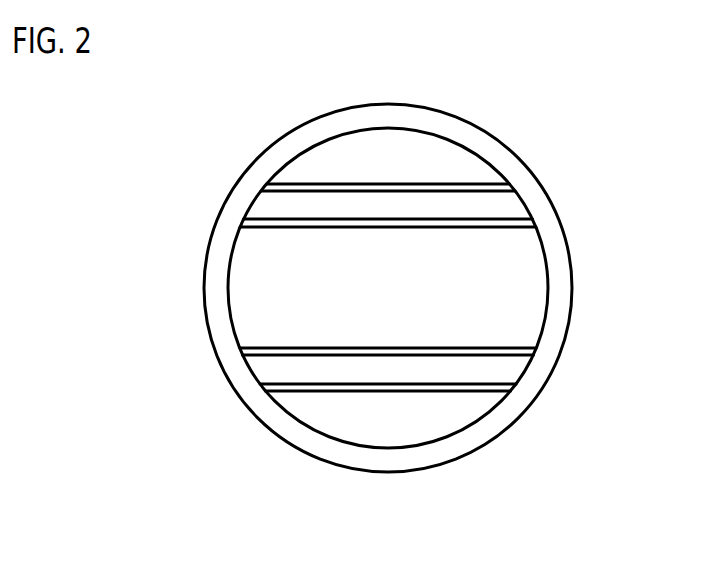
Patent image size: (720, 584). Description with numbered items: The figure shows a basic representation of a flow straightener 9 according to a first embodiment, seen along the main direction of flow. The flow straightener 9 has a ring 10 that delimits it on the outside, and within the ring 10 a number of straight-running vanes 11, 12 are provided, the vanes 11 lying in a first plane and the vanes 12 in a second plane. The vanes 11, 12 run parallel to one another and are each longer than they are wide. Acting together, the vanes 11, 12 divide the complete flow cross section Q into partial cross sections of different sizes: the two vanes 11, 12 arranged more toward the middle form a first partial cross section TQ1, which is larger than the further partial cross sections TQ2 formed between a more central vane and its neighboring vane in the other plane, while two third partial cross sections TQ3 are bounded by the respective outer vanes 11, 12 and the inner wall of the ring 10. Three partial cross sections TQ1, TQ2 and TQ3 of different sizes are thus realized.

The flow straightener 9 is at (514, 115).
The ring 10 is at (249, 168).
The vanes 11 is at (250, 231).
The vanes 12 is at (497, 180).
The complete flow cross section Q is at (386, 152).
The first partial cross section TQ1 is at (522, 277).
The second partial cross section TQ2 is at (228, 450).
The third partial cross section TQ3 is at (438, 153).